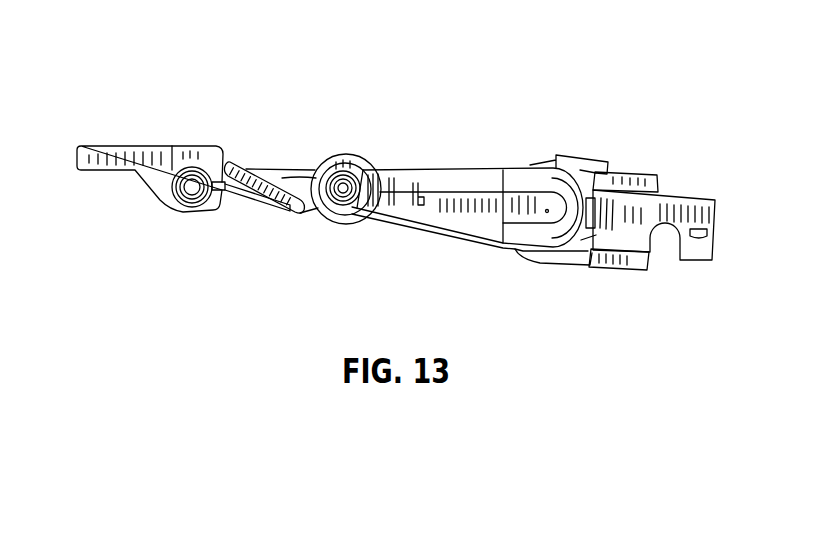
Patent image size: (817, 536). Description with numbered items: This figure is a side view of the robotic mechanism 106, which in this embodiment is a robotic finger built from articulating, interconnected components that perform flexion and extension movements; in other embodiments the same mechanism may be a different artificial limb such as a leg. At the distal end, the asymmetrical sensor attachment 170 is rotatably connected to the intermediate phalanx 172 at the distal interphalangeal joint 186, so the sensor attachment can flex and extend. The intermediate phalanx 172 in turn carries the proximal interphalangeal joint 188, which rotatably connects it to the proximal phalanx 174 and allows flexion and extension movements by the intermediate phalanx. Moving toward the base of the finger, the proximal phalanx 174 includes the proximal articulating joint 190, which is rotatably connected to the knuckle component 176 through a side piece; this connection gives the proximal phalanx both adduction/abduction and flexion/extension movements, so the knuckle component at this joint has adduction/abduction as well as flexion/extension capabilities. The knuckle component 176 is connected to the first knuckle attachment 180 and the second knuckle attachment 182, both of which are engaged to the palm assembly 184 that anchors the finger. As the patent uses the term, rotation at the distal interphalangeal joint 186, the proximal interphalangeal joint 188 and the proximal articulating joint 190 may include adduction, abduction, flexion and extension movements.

The robotic mechanism 106 is at (583, 30).
The asymmetrical sensor attachment 170 is at (142, 132).
The intermediate phalanx 172 is at (306, 150).
The proximal phalanx 174 is at (442, 233).
The knuckle component 176 is at (618, 276).
The first knuckle attachment 180 is at (636, 152).
The second knuckle attachment 182 is at (671, 262).
The palm assembly 184 is at (698, 178).
The distal interphalangeal joint 186 is at (196, 212).
The proximal interphalangeal joint 188 is at (347, 226).
The proximal articulating joint 190 is at (532, 262).